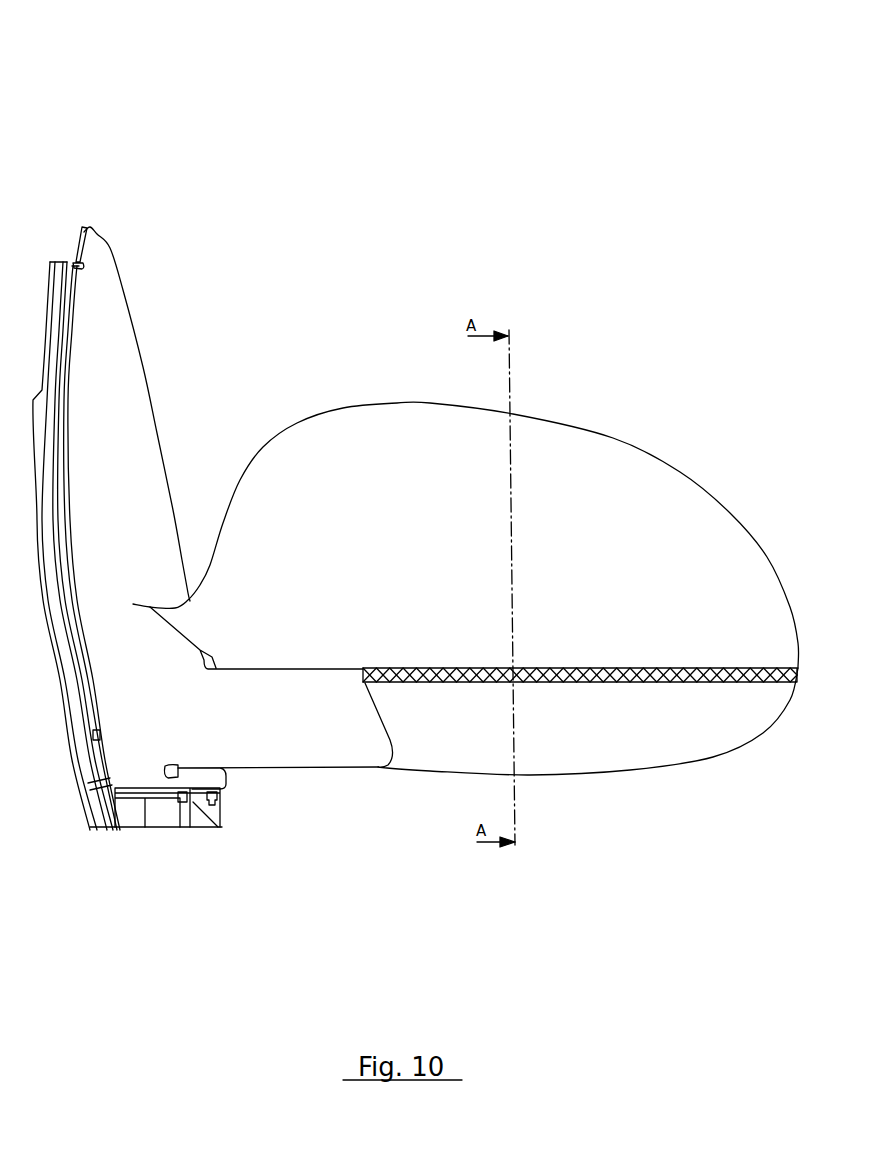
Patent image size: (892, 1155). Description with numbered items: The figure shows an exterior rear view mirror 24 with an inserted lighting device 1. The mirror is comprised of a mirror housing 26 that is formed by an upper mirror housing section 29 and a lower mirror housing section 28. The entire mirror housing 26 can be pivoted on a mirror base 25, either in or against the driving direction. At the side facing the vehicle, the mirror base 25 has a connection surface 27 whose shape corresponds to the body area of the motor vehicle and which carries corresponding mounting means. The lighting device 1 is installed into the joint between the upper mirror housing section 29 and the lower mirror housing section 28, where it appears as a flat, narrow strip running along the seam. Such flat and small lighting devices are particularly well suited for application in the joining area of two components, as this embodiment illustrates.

The lighting device 1 is at (657, 673).
The exterior rear view mirror 24 is at (565, 338).
The mirror base 25 is at (270, 718).
The mirror housing 26 is at (615, 438).
The connection surface 27 is at (48, 362).
The lower mirror housing section 28 is at (572, 738).
The upper mirror housing section 29 is at (357, 443).